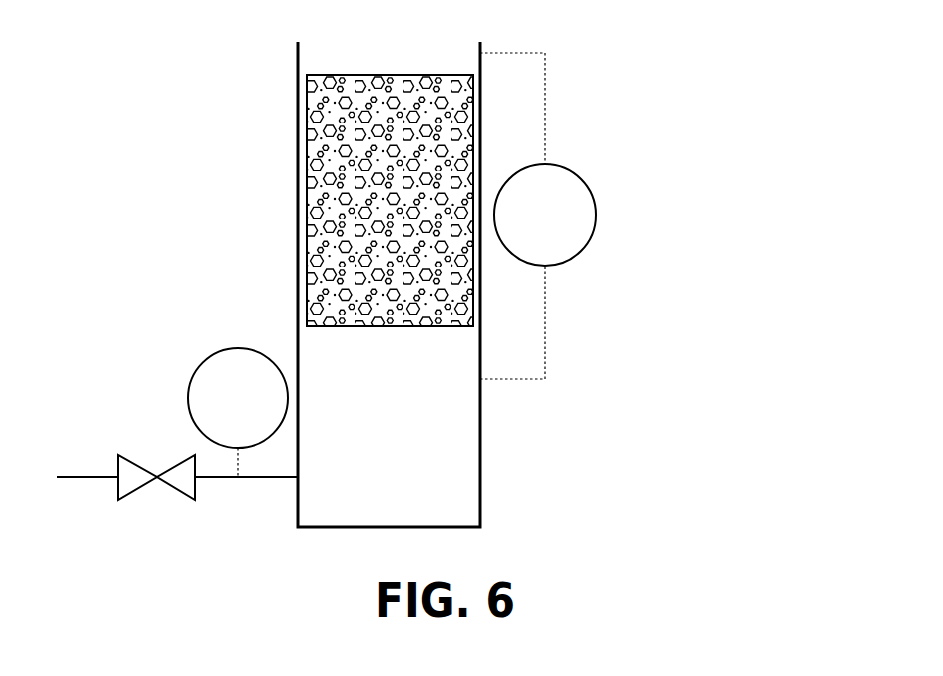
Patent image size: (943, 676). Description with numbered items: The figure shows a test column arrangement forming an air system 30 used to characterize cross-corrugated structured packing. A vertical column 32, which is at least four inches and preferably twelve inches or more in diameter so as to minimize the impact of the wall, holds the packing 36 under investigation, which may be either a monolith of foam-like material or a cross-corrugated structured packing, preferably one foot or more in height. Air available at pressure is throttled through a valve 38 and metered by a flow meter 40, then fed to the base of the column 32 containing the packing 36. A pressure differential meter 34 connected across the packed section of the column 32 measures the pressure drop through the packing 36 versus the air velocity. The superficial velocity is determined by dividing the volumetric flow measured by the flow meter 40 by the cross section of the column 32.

The air system 30 is at (685, 177).
The column 32 is at (292, 198).
The pressure differential meter 34 is at (583, 193).
The packing 36 is at (318, 268).
The valve 38 is at (130, 472).
The flow meter 40 is at (204, 385).